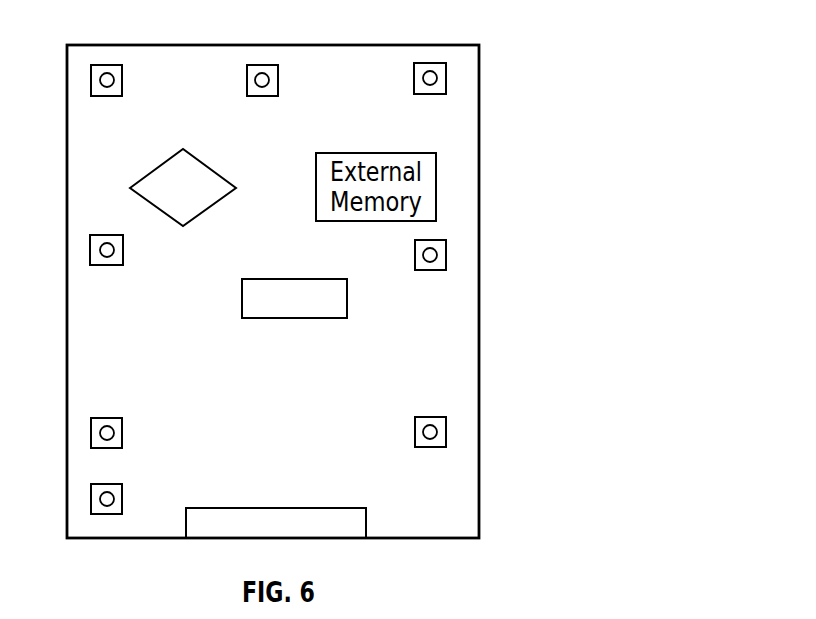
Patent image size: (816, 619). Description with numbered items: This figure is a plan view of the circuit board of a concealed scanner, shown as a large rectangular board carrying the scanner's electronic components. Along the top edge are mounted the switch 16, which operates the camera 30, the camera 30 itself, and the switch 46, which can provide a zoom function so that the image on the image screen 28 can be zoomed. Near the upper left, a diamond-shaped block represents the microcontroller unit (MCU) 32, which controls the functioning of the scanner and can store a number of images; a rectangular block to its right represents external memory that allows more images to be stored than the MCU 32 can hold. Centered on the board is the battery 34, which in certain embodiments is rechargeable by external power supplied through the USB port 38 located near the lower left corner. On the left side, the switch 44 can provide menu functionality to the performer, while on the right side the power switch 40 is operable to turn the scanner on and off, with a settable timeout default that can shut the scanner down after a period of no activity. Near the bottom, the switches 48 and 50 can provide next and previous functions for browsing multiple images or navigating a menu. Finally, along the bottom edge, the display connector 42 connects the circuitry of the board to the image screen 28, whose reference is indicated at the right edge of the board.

The switch 16 is at (105, 65).
The image screen 28 is at (479, 322).
The camera 30 is at (257, 65).
The microcontroller unit (MCU) 32 is at (172, 156).
The battery 34 is at (273, 319).
The USB port 38 is at (90, 498).
The power switch 40 is at (447, 252).
The display connector 42 is at (333, 523).
The switch 44 is at (90, 248).
The switch 46 is at (433, 63).
The switch 48 is at (90, 432).
The switch 50 is at (442, 428).